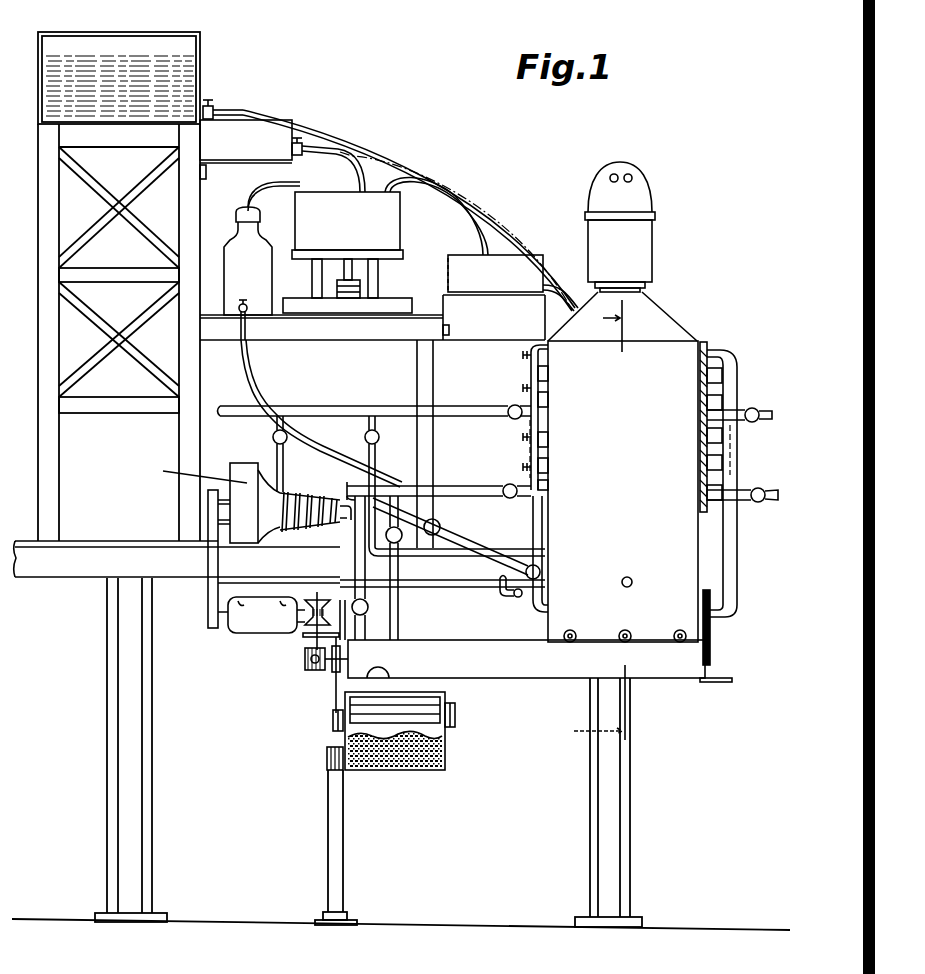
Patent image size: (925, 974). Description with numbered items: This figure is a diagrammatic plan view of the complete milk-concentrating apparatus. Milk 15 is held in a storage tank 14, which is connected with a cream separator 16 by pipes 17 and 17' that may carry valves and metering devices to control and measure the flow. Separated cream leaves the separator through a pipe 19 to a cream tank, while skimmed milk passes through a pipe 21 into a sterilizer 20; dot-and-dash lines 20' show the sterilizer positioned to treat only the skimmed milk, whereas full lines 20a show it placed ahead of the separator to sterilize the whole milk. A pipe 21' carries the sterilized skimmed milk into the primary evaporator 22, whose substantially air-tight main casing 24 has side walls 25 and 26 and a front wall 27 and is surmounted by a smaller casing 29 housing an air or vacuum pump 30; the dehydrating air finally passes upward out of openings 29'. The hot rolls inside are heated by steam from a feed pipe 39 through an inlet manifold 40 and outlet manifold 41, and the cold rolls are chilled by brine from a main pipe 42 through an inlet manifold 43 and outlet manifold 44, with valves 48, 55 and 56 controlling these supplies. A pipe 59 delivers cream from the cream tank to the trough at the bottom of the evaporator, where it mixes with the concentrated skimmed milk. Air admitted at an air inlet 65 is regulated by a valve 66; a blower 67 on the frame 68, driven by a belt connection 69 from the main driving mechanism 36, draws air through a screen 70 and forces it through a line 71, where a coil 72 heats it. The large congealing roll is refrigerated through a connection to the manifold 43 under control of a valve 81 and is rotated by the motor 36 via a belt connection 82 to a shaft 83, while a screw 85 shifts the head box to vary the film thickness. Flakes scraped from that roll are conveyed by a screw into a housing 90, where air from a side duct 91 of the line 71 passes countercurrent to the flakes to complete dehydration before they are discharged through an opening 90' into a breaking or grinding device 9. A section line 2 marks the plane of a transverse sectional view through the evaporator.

The section line 2- 2 is at (590, 520).
The receiving hopper / trough 9 is at (447, 746).
The storage tank 14 is at (203, 62).
The milk 15 is at (116, 66).
The cream separator 16 is at (347, 252).
The pipe 17 is at (389, 200).
The pipe 17' is at (432, 214).
The pipe 19 is at (272, 181).
The sterilizer 20 is at (494, 297).
The dot-and-dash lines 20' is at (434, 274).
The full lines 20a is at (278, 130).
The pipe 21 is at (436, 216).
The pipe 21' is at (554, 301).
The primary evaporator 22 is at (637, 479).
The main casing 24 is at (674, 306).
The side wall 25 is at (547, 343).
The side wall 26 is at (737, 575).
The front wall 27 is at (548, 627).
The smaller casing 29 is at (636, 227).
The openings 29' is at (606, 164).
The air or vacuum pump 30 is at (663, 232).
The motor or driving connection 36 is at (250, 641).
The feed pipe 39 is at (234, 405).
The inlet manifold 40 is at (528, 373).
The outlet manifold 41 is at (737, 373).
The main pipe 42 is at (462, 480).
The inlet manifold 43 is at (532, 511).
The outlet manifold 44 is at (740, 477).
The valve 48 is at (522, 355).
The valve 55 is at (512, 420).
The valve 56 is at (522, 467).
The pipe 59 is at (258, 380).
The air inlet 65 is at (527, 549).
The valve 66 is at (440, 527).
The blower 67 is at (259, 467).
The frame 68 is at (177, 562).
The belt connection 69 is at (210, 520).
The screen 70 is at (235, 472).
The line 71 is at (348, 508).
The coil 72 is at (298, 492).
The valve 81 is at (512, 573).
The belt connection 82 is at (704, 640).
The shaft 83 is at (303, 660).
The screw 85 is at (629, 587).
The housing 90 is at (526, 659).
The opening 90' is at (385, 682).
The side duct 91 is at (354, 568).